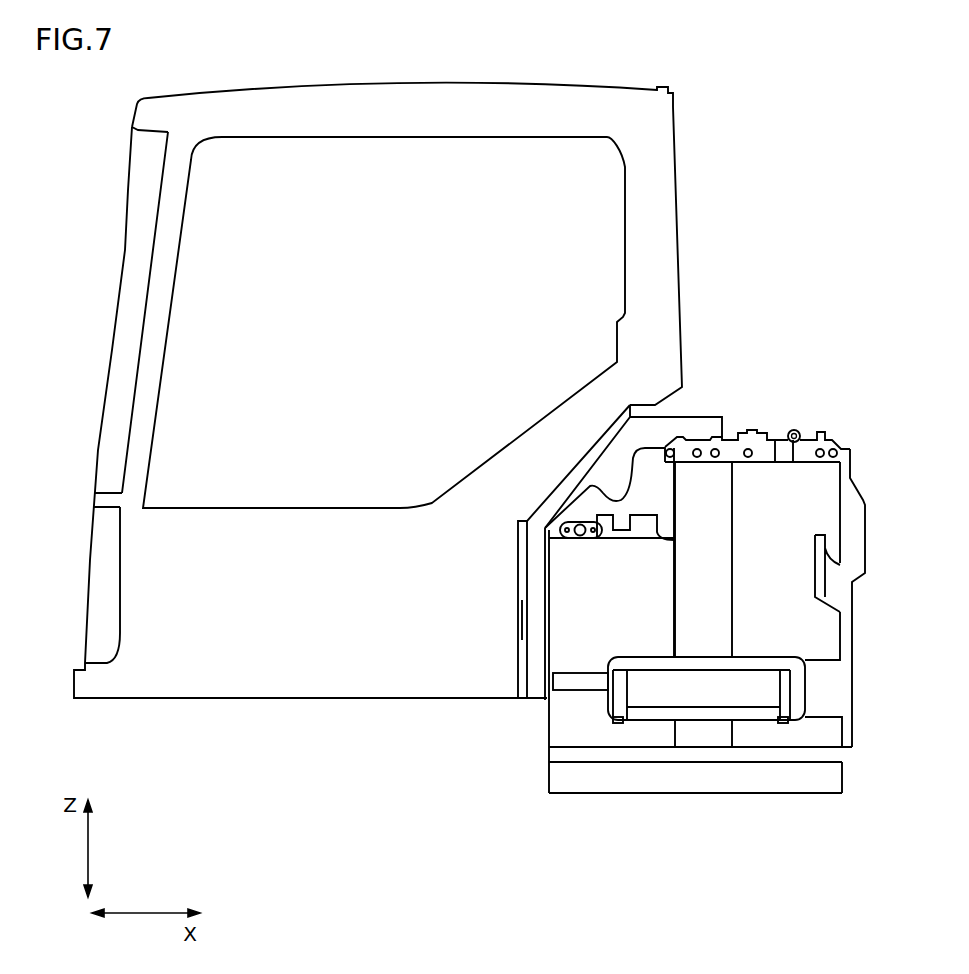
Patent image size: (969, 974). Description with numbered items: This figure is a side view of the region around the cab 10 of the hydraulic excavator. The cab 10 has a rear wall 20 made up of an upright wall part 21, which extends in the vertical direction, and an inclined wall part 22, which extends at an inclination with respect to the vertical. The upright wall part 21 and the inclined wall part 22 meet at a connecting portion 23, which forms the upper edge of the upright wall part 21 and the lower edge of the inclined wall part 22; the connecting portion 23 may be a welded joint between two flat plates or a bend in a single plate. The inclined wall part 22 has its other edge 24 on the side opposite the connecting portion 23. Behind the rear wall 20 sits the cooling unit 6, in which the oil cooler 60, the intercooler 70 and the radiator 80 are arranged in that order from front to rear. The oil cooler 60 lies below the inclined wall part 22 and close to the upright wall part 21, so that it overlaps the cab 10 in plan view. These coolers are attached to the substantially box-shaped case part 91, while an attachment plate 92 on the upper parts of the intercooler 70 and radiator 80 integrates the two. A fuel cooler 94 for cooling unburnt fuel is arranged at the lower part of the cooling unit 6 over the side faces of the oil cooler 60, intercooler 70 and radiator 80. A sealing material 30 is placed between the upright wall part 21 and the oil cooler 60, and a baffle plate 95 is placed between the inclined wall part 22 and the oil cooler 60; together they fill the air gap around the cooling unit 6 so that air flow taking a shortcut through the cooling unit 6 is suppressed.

The cab 10 is at (332, 197).
The rear wall 20 is at (508, 632).
The upright wall part 21 is at (522, 675).
The inclined wall part 22 is at (597, 442).
The connecting portion 23 is at (513, 517).
The other edge 24 is at (655, 405).
The sealing material 30 is at (537, 645).
The cooling unit 6 is at (845, 418).
The oil cooler 60 is at (598, 707).
The intercooler 70 is at (703, 625).
The radiator 80 is at (760, 623).
The case part 91 is at (848, 627).
The attachment plate 92 is at (803, 455).
The fuel cooler 94 is at (657, 693).
The baffle plate 95 is at (650, 467).